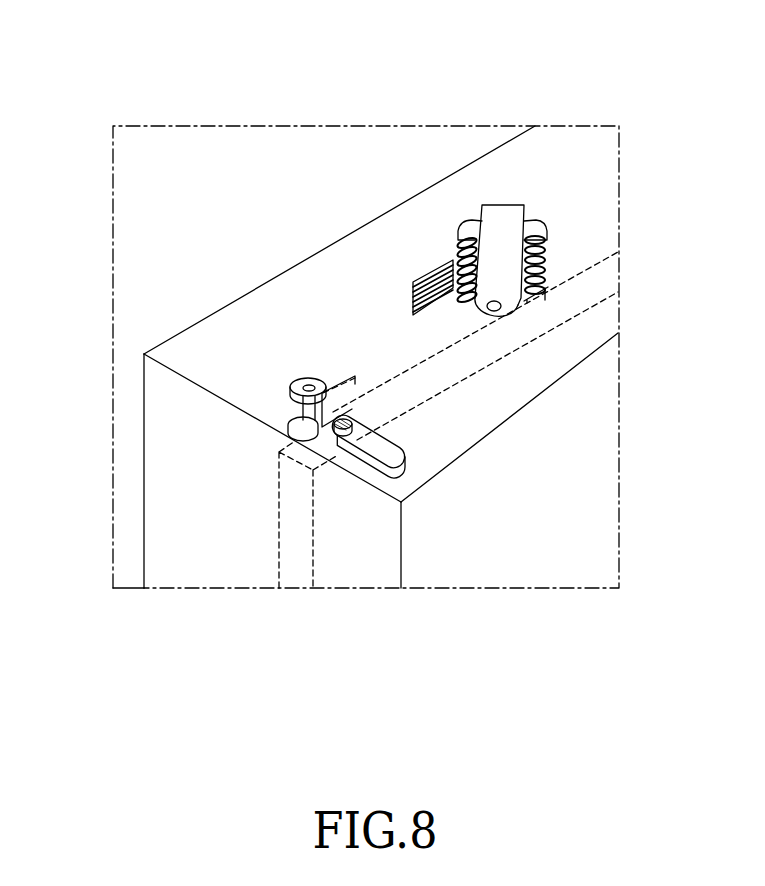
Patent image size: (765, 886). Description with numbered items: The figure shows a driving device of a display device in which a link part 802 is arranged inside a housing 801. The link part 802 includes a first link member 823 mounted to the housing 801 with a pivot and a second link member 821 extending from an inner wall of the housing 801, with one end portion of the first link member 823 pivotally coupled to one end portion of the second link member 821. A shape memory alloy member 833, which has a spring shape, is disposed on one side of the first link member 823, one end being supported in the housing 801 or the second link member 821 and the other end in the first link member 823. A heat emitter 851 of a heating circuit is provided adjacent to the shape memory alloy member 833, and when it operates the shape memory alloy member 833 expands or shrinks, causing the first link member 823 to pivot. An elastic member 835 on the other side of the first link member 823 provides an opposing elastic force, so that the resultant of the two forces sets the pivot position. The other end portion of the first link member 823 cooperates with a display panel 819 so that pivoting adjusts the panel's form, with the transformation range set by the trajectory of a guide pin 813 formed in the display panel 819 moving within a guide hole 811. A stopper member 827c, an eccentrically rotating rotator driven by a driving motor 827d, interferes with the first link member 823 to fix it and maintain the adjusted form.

The housing 801 is at (183, 535).
The link part 802 is at (510, 60).
The guide hole 811 is at (405, 452).
The guide pin 813 is at (370, 457).
The display panel 819 is at (595, 492).
The second link member 821 is at (507, 220).
The first link member 823 is at (387, 360).
The stopper member 827c is at (292, 384).
The driving motor 827d is at (287, 426).
The shape memory alloy member 833 is at (475, 298).
The elastic member 835 is at (548, 255).
The heat emitter 851 is at (430, 304).